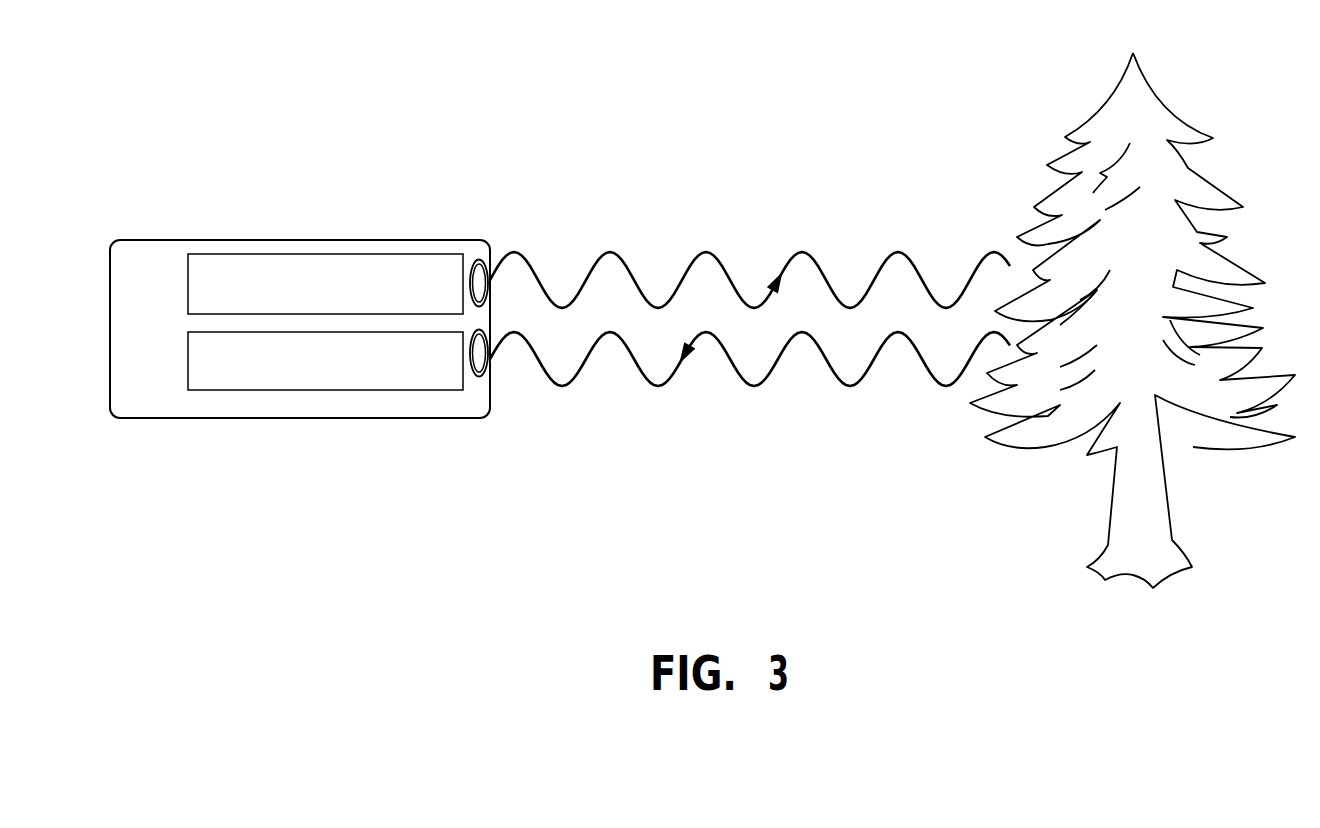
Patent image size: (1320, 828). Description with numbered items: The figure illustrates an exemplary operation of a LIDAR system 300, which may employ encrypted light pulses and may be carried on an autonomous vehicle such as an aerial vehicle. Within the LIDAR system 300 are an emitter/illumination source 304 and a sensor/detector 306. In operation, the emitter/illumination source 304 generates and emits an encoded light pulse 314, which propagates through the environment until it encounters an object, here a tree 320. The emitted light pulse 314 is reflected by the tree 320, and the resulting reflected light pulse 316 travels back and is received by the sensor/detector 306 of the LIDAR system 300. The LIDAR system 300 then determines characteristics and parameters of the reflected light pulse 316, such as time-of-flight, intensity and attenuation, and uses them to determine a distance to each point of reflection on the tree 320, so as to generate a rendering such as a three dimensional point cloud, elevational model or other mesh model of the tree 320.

The LIDAR system 300 is at (197, 240).
The emitter/illumination source 304 is at (425, 253).
The sensor/detector 306 is at (420, 393).
The emitted light pulse 314 is at (610, 251).
The reflected light pulse 316 is at (658, 387).
The tree 320 is at (1165, 105).